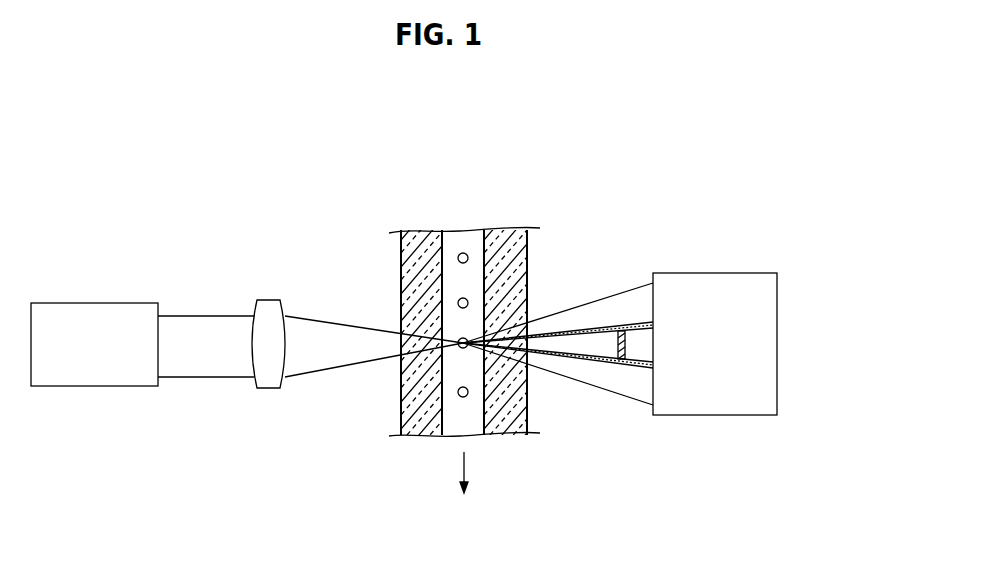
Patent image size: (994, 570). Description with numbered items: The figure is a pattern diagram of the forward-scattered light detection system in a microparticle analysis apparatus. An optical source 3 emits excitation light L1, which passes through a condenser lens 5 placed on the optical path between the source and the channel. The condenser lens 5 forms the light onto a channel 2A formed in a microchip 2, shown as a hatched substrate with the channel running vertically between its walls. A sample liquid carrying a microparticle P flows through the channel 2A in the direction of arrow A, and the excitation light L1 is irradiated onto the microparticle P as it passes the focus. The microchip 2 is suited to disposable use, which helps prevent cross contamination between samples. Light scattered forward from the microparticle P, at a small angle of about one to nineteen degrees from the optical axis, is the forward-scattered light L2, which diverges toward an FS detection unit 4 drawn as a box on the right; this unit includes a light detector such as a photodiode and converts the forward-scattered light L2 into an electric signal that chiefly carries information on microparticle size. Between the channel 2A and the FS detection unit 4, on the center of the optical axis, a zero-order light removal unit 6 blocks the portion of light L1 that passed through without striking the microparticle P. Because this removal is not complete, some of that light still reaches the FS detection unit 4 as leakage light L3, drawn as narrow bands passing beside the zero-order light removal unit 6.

The optical source 3 is at (85, 377).
The excitation light L1 is at (200, 365).
The condenser lens 5 is at (275, 298).
The microchip 2 is at (510, 418).
The channel 2A is at (453, 232).
The microparticle P is at (466, 253).
The forward-scattered light L2 is at (575, 317).
The leakage light L3 is at (633, 322).
The zero-order light removal unit 6 is at (630, 363).
The FS detection unit 4 is at (740, 405).
The flow direction A is at (458, 468).